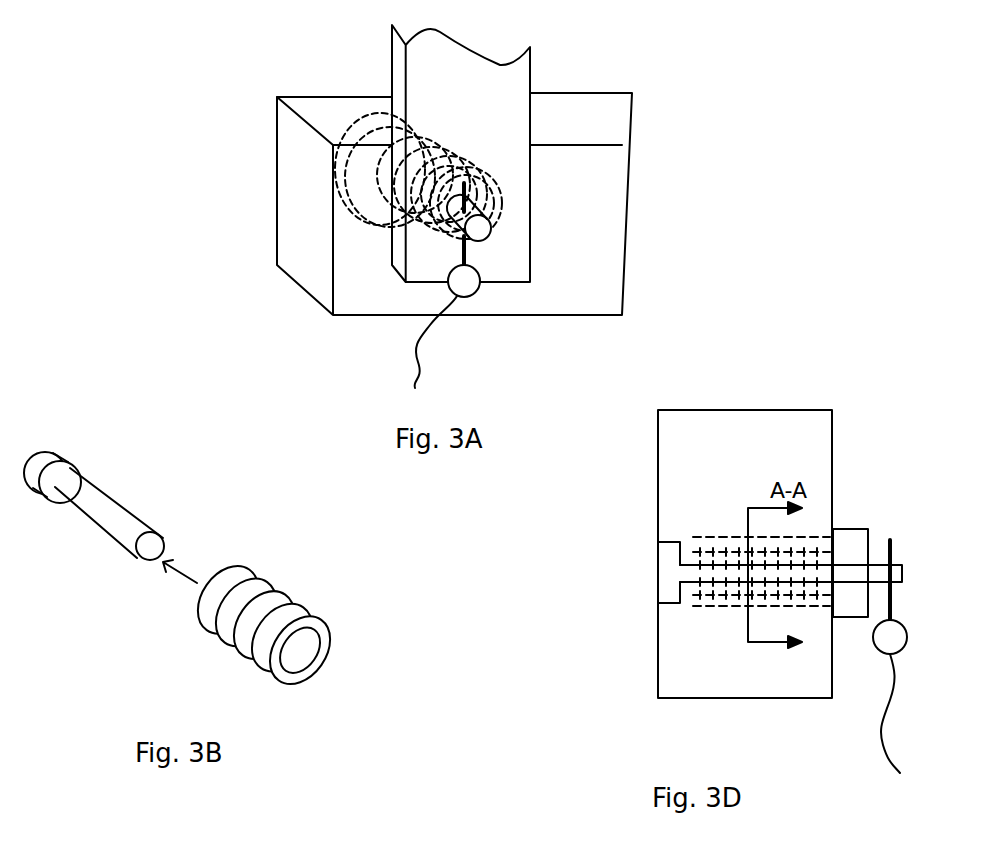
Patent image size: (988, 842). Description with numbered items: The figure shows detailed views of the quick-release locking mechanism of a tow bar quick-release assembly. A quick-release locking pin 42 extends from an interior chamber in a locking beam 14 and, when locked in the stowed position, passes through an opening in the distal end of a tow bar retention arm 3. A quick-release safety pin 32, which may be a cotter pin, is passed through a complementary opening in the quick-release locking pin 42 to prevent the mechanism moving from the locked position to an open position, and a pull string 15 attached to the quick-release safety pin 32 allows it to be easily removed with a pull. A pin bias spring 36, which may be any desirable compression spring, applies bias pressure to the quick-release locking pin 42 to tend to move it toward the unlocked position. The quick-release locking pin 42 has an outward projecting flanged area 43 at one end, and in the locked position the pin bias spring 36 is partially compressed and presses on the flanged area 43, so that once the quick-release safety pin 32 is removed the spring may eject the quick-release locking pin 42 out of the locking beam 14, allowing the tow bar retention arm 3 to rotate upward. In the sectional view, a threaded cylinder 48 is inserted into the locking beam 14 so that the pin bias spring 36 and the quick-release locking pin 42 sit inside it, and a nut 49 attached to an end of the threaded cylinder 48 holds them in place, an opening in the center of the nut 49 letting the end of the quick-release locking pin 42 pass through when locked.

In FIG. 3A, the tow bar retention arm 3 is at (493, 122).
In FIG. 3A, the locking beam 14 is at (575, 265).
In FIG. 3D, the locking beam 14 is at (755, 443).
In FIG. 3A, the pull string 15 is at (413, 370).
In FIG. 3D, the pull string 15 is at (882, 742).
In FIG. 3A, the quick-release safety pin 32 is at (455, 283).
In FIG. 3D, the quick-release safety pin 32 is at (880, 657).
In FIG. 3A, the pin bias spring 36 is at (383, 201).
In FIG. 3B, the pin bias spring 36 is at (252, 588).
In FIG. 3D, the pin bias spring 36 is at (713, 553).
In FIG. 3A, the quick-release locking pin 42 is at (475, 232).
In FIG. 3B, the quick-release locking pin 42 is at (105, 510).
In FIG. 3D, the quick-release locking pin 42 is at (857, 575).
In FIG. 3A, the flanged area 43 is at (358, 128).
In FIG. 3B, the flanged area 43 is at (48, 455).
In FIG. 3D, the flanged area 43 is at (668, 583).
In FIG. 3D, the threaded cylinder 48 is at (737, 603).
In FIG. 3D, the nut 49 is at (850, 537).